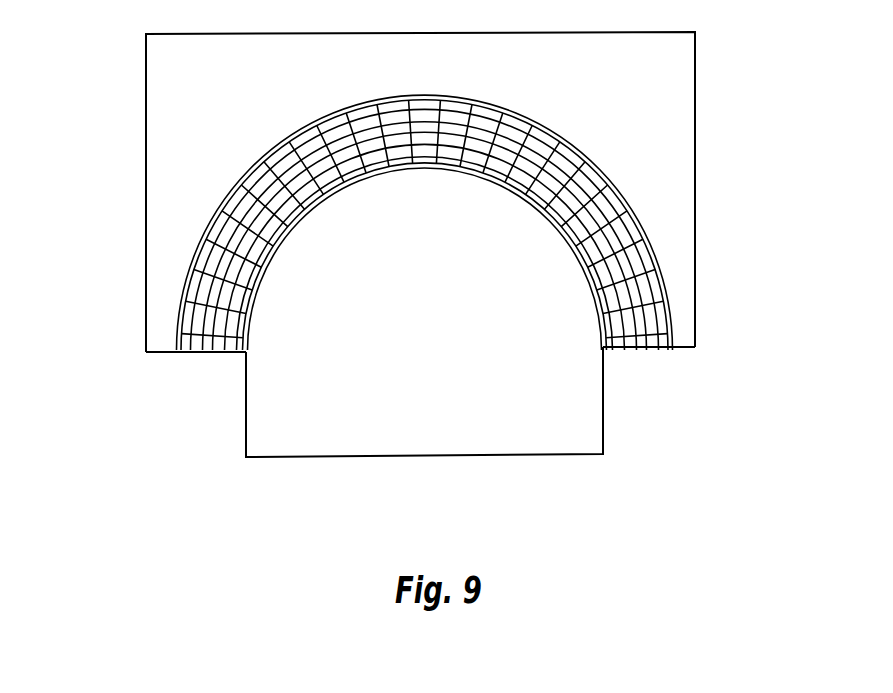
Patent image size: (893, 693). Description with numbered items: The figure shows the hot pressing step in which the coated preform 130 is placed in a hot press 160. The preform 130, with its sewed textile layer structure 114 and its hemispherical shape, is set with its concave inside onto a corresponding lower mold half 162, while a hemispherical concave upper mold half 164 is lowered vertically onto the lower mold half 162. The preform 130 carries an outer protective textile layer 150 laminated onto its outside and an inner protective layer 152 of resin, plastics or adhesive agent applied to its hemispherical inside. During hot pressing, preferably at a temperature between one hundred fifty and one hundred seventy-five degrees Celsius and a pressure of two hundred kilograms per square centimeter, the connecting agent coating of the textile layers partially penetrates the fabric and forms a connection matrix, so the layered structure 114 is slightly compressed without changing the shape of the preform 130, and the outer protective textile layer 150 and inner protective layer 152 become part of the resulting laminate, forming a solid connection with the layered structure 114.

The hot press 160 is at (396, 244).
The upper mold half 164 is at (162, 113).
The lower mold half 162 is at (275, 417).
The textile layer structure 114 is at (637, 350).
The outer protective textile layer 150 is at (476, 222).
The preform 130 is at (662, 260).
The inner protective layer 152 is at (595, 310).